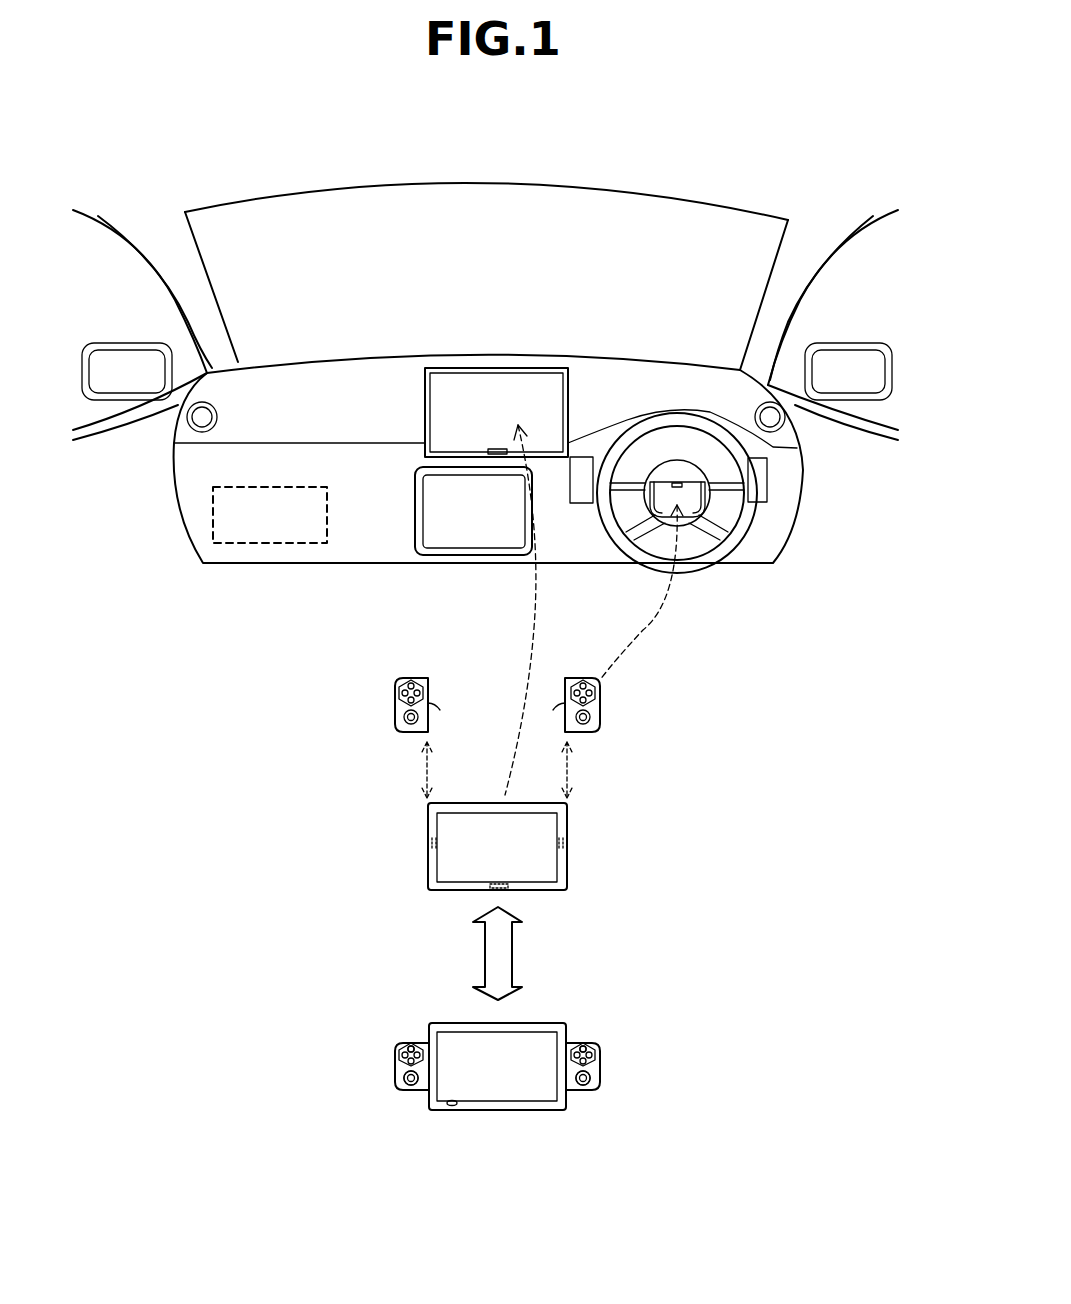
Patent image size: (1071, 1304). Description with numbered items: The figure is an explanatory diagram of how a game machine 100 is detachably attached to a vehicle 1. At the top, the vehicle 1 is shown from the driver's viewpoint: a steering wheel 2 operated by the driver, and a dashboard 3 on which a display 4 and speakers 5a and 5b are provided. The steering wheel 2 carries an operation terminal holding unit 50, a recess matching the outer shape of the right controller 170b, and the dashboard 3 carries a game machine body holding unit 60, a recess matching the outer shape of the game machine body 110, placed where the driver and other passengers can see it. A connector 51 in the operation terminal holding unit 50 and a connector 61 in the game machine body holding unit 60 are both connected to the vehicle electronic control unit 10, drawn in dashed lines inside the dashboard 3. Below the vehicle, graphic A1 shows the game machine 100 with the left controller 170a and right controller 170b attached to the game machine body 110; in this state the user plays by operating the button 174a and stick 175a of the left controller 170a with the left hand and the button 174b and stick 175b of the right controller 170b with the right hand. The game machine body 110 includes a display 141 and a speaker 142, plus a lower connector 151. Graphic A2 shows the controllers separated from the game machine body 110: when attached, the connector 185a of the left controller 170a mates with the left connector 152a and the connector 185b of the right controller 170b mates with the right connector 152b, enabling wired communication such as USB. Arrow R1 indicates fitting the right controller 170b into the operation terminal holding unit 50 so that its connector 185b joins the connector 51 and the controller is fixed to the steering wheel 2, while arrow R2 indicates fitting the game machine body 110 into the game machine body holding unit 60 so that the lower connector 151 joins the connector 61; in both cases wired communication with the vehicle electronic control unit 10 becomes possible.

The vehicle 1 is at (606, 132).
The steering wheel 2 is at (713, 573).
The dashboard 3 is at (640, 380).
The display 4 is at (415, 500).
The speaker 5a is at (187, 422).
The speaker 5b is at (785, 417).
The vehicle electronic control unit 10 is at (213, 512).
The operation terminal holding unit 50 is at (693, 502).
The connector 51 is at (677, 480).
The game machine body holding unit 60 is at (488, 370).
The connector 61 is at (496, 449).
The game machine 100 is at (437, 1005).
The game machine body 110 is at (567, 872).
The display 141 is at (510, 1092).
The speaker 142 is at (452, 1106).
The lower connector 151 is at (500, 890).
The left connector 152a is at (432, 843).
The right connector 152b is at (563, 843).
The left controller 170a is at (395, 708).
The right controller 170b is at (600, 710).
The button 174a is at (397, 1045).
The button 174b is at (600, 1045).
The stick 175a is at (398, 1090).
The stick 175b is at (600, 1090).
The connector 185a is at (440, 710).
The connector 185b is at (553, 710).
The arrow R1 is at (640, 632).
The arrow R2 is at (537, 613).
The graphic A1 is at (663, 1007).
The graphic A2 is at (663, 803).